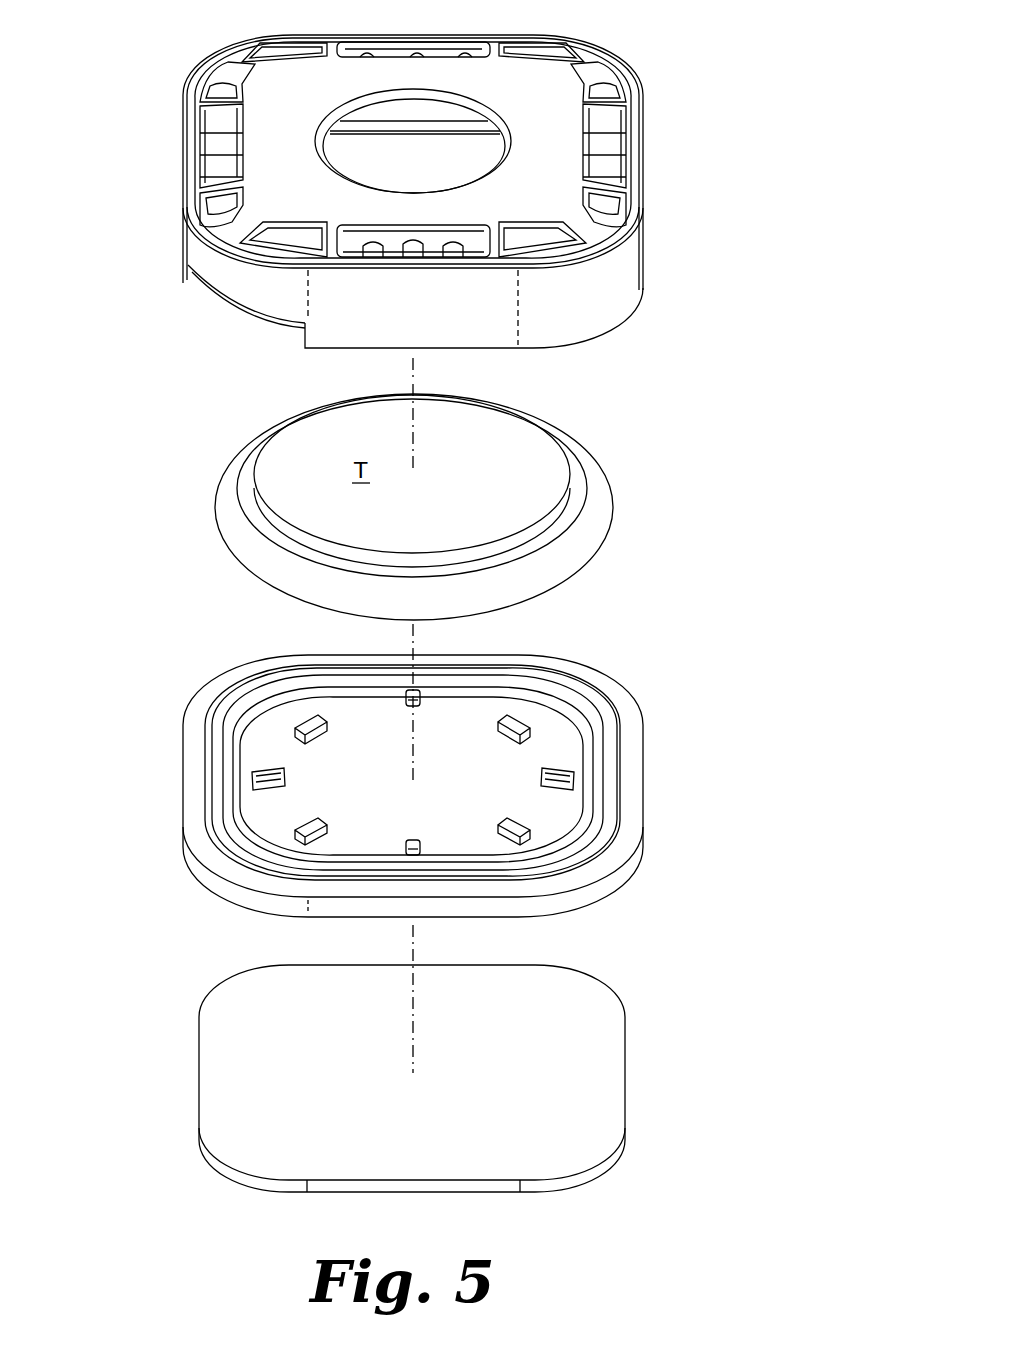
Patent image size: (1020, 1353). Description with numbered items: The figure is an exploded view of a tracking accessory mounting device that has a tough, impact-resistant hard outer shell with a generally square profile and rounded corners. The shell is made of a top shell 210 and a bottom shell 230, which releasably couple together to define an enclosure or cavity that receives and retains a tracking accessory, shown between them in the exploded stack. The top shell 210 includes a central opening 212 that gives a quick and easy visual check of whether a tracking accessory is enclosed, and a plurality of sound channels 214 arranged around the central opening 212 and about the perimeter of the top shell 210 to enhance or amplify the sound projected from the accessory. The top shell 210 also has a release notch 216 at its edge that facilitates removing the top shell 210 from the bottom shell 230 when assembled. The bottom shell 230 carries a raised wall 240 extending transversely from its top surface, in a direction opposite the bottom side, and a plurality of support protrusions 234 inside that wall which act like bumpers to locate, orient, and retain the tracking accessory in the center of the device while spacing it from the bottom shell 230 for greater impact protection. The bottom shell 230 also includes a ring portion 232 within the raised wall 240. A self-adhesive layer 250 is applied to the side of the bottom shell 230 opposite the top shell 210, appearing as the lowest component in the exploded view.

The top shell 210 is at (620, 261).
The central opening 212 is at (458, 95).
The sound channels 214 is at (632, 128).
The release notch 216 is at (202, 312).
The bottom shell 230 is at (436, 781).
The ring 232 is at (625, 837).
The support protrusions 234 is at (284, 729).
The raised wall 240 is at (220, 852).
The self-adhesive layer 250 is at (578, 1077).